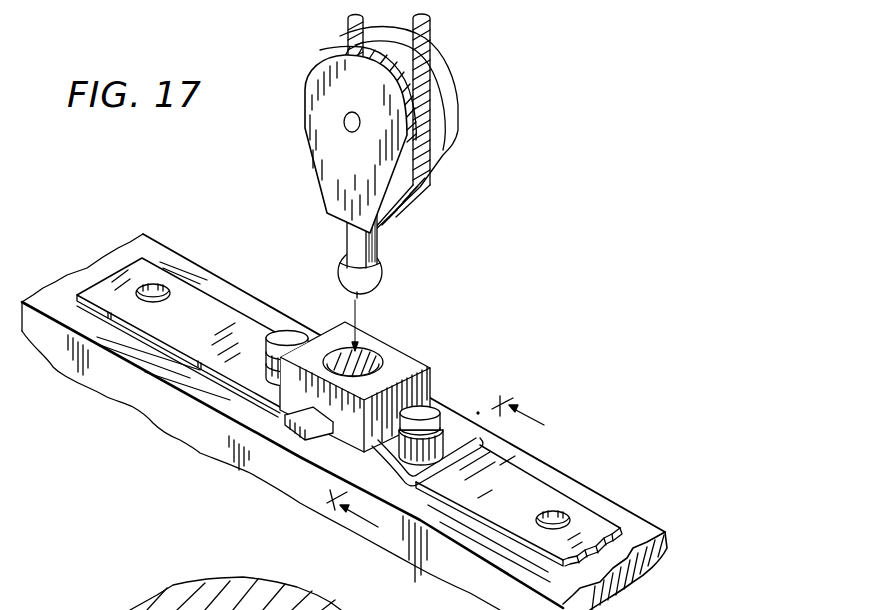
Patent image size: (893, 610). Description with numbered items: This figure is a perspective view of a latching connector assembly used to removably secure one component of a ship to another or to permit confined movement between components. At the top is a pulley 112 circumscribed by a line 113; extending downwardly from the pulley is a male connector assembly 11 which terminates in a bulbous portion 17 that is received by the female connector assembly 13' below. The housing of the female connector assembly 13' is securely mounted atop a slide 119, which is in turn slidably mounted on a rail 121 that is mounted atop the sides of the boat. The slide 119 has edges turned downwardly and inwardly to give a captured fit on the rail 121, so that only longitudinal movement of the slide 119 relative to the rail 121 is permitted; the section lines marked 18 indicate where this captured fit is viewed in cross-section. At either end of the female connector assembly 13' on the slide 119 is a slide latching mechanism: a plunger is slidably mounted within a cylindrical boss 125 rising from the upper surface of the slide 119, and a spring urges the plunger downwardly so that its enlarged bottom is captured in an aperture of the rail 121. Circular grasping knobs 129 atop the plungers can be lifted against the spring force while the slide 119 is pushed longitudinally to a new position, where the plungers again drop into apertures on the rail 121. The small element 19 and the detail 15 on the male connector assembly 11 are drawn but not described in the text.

The male connector assembly 11 is at (343, 241).
The shank 15 is at (372, 249).
The bulbous portion 17 is at (383, 283).
The key tab 19 is at (303, 432).
The female connector assembly 13' is at (370, 376).
The section line 18 is at (448, 477).
The pulley 112 is at (320, 149).
The line 113 is at (348, 37).
The slide 119 is at (397, 477).
The rail 121 is at (537, 488).
The cylindrical boss 125 is at (433, 432).
The circular grasping knobs 129 is at (290, 334).